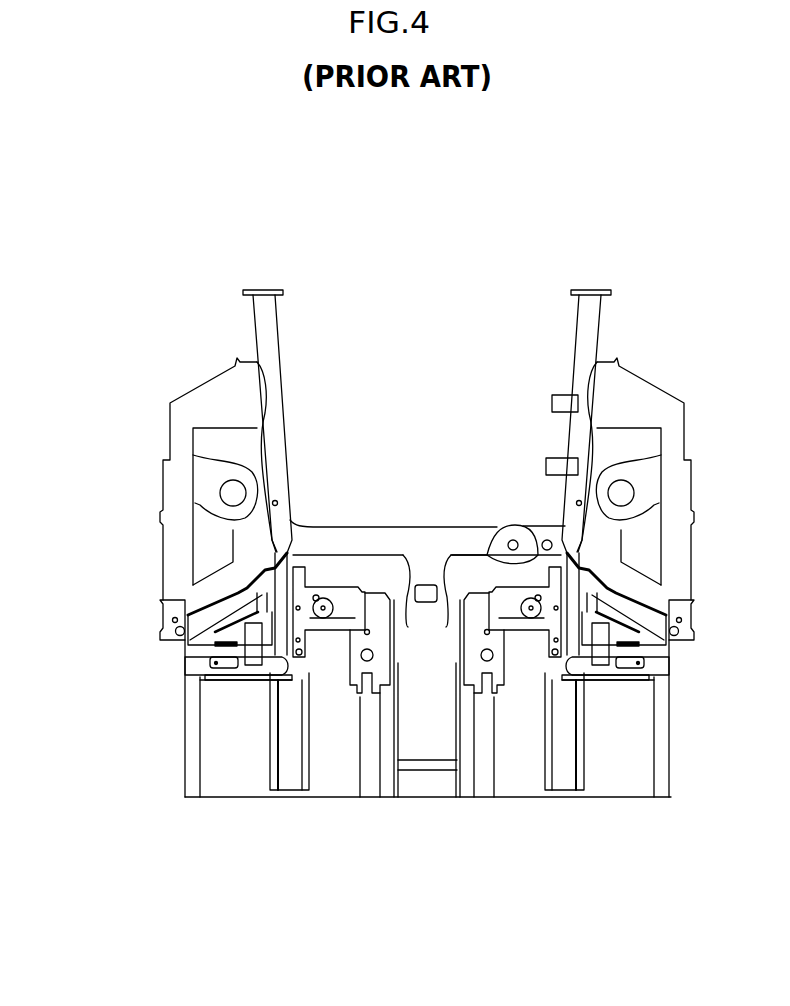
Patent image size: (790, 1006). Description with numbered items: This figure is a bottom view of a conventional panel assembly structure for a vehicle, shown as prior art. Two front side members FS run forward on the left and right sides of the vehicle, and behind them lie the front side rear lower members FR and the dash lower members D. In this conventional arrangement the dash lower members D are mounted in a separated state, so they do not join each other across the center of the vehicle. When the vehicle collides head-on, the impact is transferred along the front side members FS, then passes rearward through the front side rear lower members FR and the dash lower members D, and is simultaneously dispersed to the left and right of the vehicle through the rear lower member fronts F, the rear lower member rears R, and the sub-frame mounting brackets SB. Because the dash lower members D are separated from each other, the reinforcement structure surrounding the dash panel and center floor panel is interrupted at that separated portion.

The front side member FS is at (580, 330).
The sub-frame mounting bracket SB is at (526, 604).
The dash lower member D is at (481, 607).
The rear lower member front F is at (562, 621).
The front side rear lower member FR is at (565, 745).
The rear lower member rear R is at (613, 665).